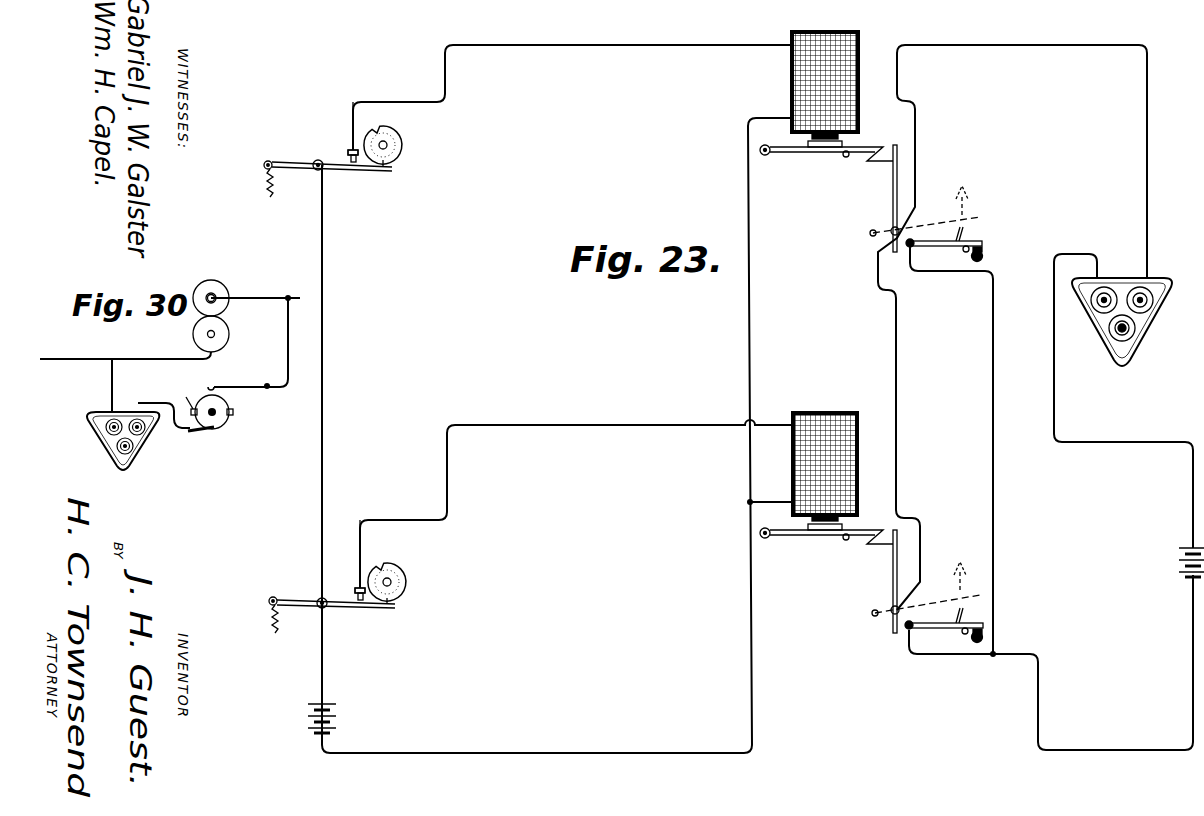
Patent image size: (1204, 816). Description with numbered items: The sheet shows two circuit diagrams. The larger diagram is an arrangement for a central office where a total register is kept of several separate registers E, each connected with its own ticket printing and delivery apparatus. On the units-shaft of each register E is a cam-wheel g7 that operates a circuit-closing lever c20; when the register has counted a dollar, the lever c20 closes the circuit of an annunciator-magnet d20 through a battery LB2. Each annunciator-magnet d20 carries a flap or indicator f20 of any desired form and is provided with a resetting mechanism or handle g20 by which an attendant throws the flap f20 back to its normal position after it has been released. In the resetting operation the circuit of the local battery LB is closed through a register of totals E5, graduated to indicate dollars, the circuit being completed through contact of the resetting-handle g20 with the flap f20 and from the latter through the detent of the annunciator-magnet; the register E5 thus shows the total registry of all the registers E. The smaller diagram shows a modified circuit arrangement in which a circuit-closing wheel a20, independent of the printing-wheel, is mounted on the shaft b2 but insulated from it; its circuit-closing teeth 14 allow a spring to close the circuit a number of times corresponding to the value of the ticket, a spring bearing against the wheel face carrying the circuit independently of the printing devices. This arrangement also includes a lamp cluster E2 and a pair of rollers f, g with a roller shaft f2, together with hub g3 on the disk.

In FIG. 23, the register E is at (331, 367).
In FIG. 23, the cam-wheel g7 is at (401, 138).
In FIG. 23, the disk hub g3 is at (387, 147).
In FIG. 23, the circuit-closing lever c20 is at (347, 170).
In FIG. 23, the annunciator-magnet d20 is at (790, 95).
In FIG. 30, the flap or indicator f20 is at (251, 388).
In FIG. 23, the flap or indicator f20 is at (892, 199).
In FIG. 23, the resetting mechanism or handle g20 is at (974, 238).
In FIG. 23, the register of totals E5 is at (1127, 322).
In FIG. 23, the local battery LB is at (1161, 562).
In FIG. 23, the battery LB2 is at (345, 668).
In FIG. 30, the upper roller f is at (221, 283).
In FIG. 30, the roller shaft f2 is at (215, 296).
In FIG. 30, the lower roller g is at (229, 334).
In FIG. 30, the circuit-closing wheel a20 is at (228, 406).
In FIG. 30, the shaft b2 is at (216, 414).
In FIG. 30, the circuit-closing teeth 14 is at (274, 407).
In FIG. 30, the lamp cluster E2 is at (127, 441).